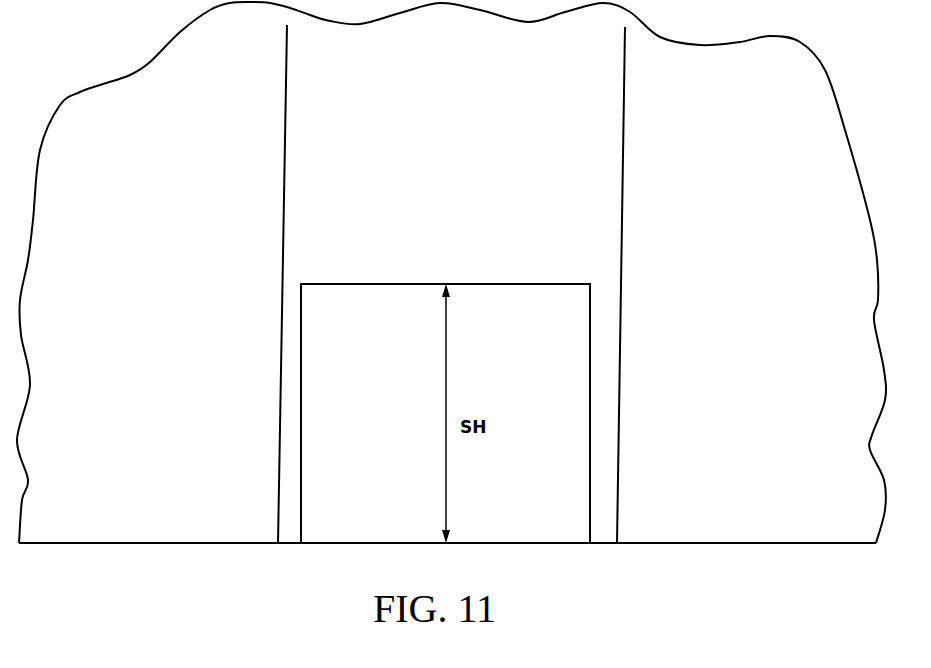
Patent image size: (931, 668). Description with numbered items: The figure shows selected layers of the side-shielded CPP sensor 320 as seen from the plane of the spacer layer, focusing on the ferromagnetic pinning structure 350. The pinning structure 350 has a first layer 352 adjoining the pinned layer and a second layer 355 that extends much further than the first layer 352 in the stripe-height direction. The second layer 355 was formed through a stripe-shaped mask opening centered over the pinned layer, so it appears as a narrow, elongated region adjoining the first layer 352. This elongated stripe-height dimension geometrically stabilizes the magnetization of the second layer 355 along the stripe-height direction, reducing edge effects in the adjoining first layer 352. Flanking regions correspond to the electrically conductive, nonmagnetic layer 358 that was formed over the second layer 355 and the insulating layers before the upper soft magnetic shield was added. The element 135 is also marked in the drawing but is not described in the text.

The electrically conductive, nonmagnetic layer 358 is at (180, 270).
The second layer 355 is at (472, 195).
The first layer 352 is at (301, 307).
The ferromagnetic pinning structure 350 is at (301, 543).
The side-shielded CPP sensor 320 is at (582, 558).
The substrate 135 is at (447, 525).